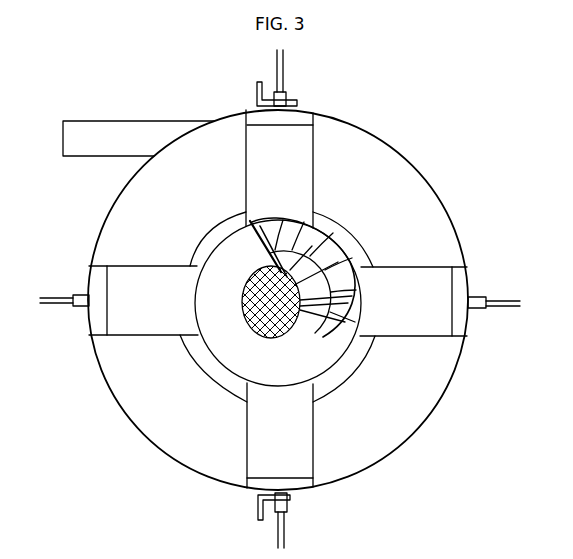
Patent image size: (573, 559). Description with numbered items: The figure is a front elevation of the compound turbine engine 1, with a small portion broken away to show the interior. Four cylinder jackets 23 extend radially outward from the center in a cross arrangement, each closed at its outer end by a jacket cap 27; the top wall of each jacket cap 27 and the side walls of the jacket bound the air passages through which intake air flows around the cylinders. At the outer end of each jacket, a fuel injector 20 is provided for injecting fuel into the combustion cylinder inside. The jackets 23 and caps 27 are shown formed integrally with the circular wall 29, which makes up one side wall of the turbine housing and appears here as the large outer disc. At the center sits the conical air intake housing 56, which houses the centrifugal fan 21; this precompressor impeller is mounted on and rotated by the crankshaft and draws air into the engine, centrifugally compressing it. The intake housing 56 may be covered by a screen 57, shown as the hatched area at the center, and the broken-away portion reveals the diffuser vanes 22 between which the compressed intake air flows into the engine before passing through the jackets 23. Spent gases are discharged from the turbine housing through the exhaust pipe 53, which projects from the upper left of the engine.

The compound turbine engine 1 is at (128, 421).
The fuel injectors 20 is at (287, 96).
The centrifugal fan 21 is at (322, 300).
The diffuser vanes 22 is at (316, 238).
The cylinder jackets 23 is at (300, 165).
The jacket cap 27 is at (302, 115).
The circular wall 29 is at (208, 236).
The exhaust pipe 53 is at (100, 128).
The conical air intake housing 56 is at (226, 354).
The screen 57 is at (277, 336).